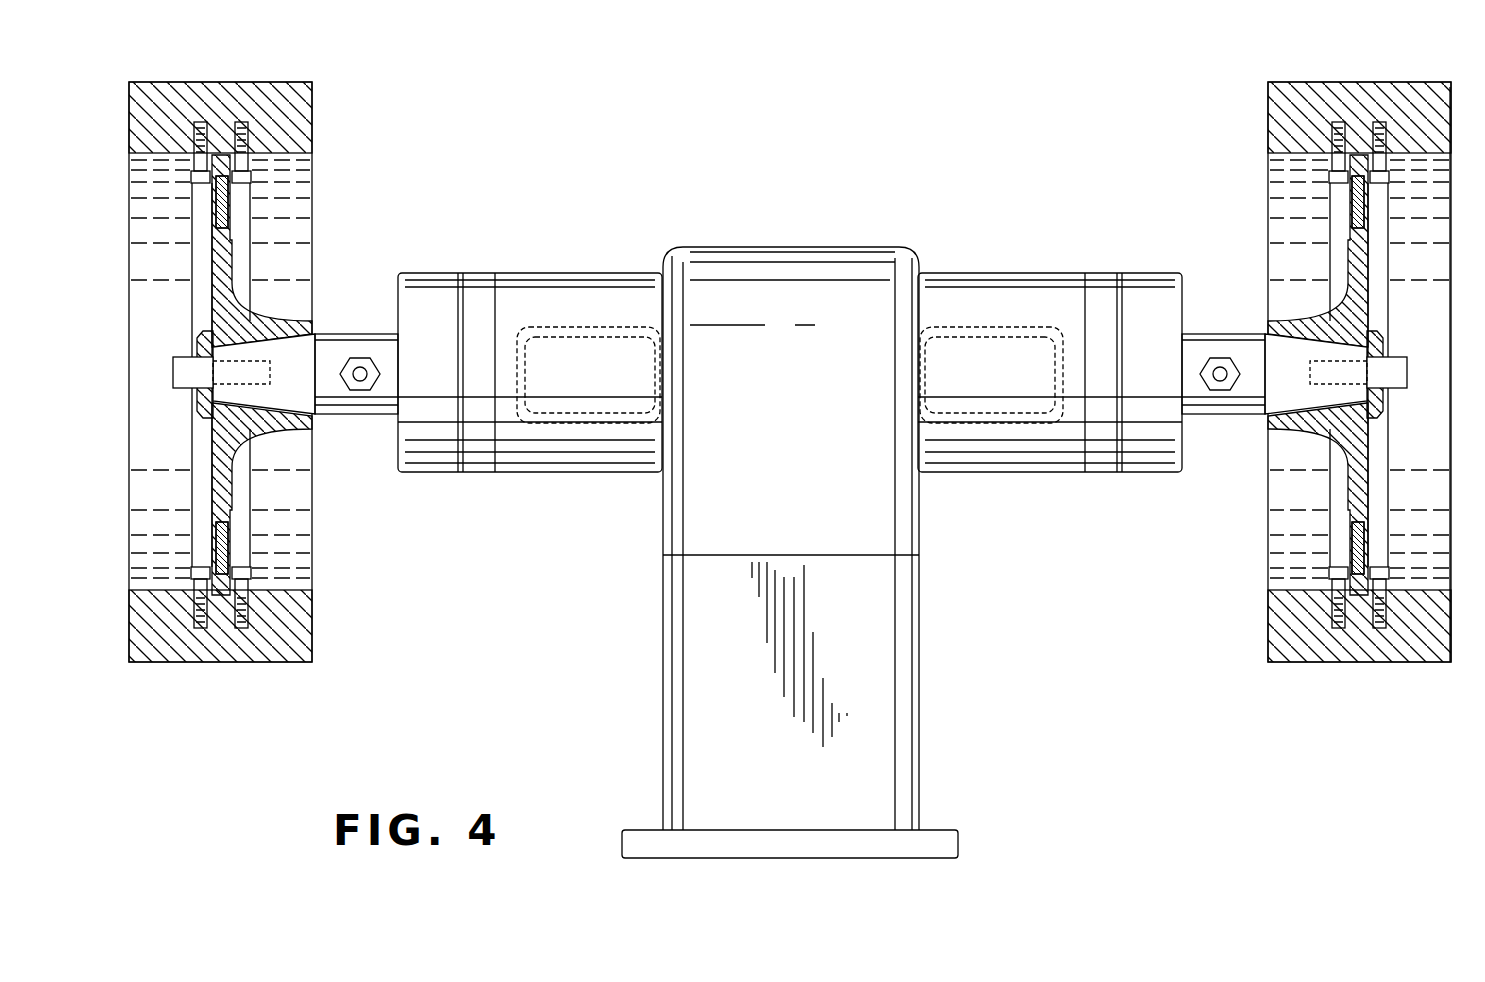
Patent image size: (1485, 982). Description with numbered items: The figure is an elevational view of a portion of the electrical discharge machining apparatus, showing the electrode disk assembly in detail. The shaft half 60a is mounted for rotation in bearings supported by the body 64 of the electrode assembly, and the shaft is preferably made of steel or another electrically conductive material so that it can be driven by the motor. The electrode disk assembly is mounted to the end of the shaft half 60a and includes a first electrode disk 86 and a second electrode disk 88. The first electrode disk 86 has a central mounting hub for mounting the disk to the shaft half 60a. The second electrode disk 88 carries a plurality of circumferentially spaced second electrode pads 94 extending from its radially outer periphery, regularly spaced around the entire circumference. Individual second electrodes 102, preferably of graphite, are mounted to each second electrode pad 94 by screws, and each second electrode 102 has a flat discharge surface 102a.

The second electrode 102 is at (1322, 88).
The flat discharge surface 102a is at (1452, 112).
The second electrode pad 94 is at (1332, 180).
The second electrode disk 88 is at (1350, 216).
The first electrode disk 86 is at (1380, 208).
The shaft half 60a is at (1210, 337).
The body 64 is at (985, 277).